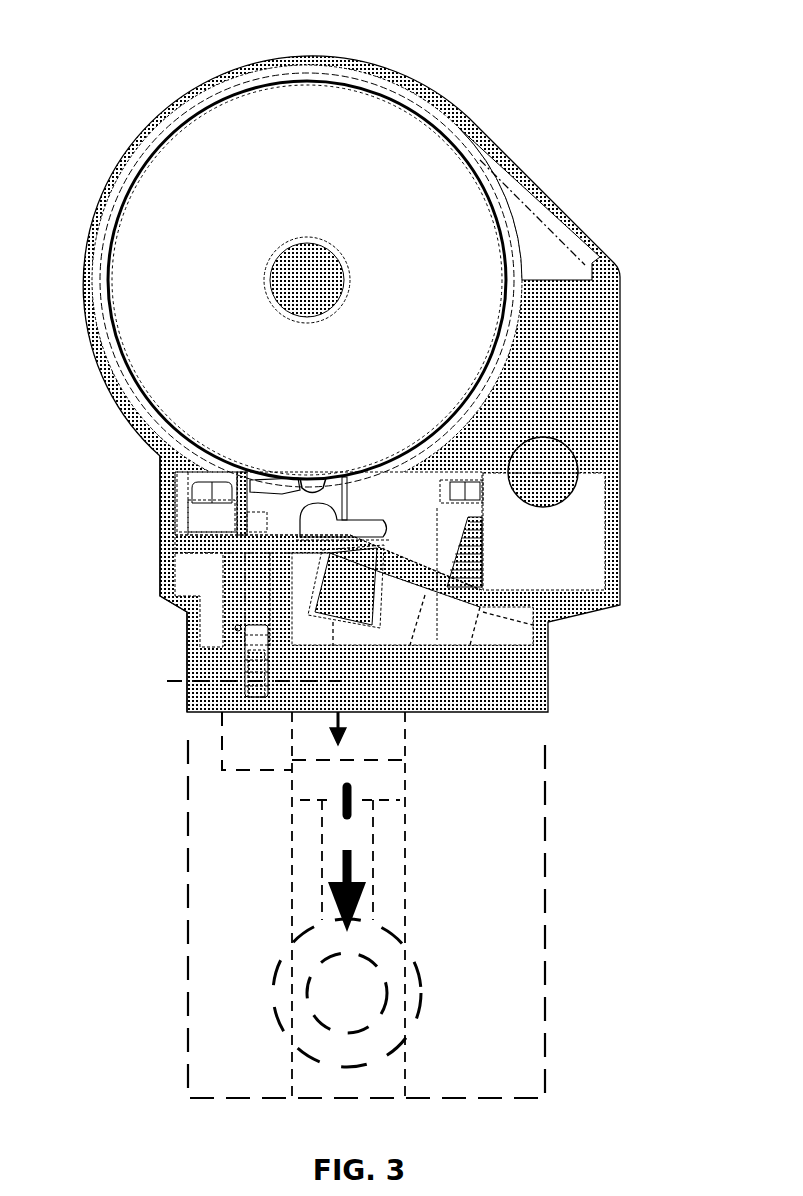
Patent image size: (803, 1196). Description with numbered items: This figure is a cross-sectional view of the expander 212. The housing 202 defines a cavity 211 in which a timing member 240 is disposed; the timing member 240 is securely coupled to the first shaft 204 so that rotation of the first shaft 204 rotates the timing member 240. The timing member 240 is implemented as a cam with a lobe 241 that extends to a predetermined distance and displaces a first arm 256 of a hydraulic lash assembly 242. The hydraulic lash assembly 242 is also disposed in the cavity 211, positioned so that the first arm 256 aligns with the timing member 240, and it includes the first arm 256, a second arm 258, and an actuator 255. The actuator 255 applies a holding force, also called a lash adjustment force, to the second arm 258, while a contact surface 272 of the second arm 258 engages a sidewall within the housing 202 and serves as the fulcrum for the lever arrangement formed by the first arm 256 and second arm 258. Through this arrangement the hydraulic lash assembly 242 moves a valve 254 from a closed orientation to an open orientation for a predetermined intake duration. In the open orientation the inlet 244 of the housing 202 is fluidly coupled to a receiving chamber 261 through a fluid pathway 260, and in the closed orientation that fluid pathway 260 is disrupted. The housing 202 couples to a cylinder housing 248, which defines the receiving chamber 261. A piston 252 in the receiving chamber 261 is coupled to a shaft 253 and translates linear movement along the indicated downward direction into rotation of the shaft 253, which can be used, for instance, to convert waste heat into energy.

The housing 202 is at (292, 50).
The first shaft 204 is at (280, 282).
The cavity 211 is at (95, 210).
The expander 212 is at (120, 82).
The timing member 240 is at (125, 365).
The lobe 241 is at (318, 462).
The hydraulic lash assembly 242 is at (236, 450).
The inlet 244 is at (165, 663).
The cylinder housing 248 is at (165, 763).
The piston 252 is at (420, 766).
The shaft 253 is at (425, 942).
The valve 254 is at (230, 518).
The actuator 255 is at (378, 524).
The first arm 256 is at (283, 480).
The second arm 258 is at (345, 505).
The fluid pathway 260 is at (170, 683).
The receiving chamber 261 is at (372, 700).
The contact surface 272 is at (280, 547).